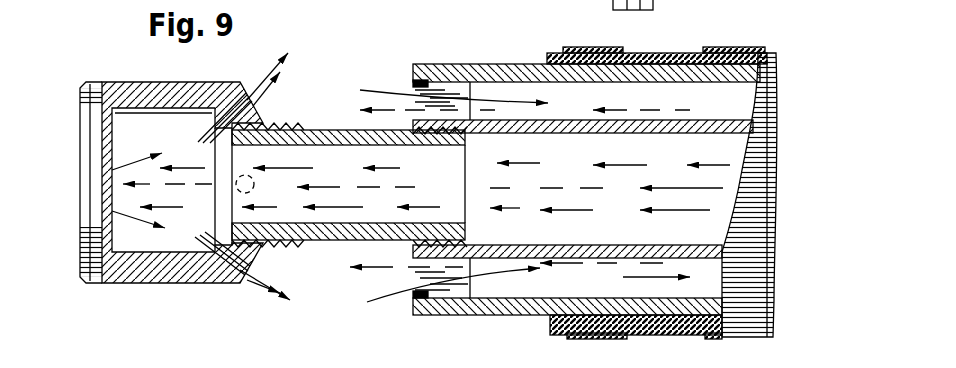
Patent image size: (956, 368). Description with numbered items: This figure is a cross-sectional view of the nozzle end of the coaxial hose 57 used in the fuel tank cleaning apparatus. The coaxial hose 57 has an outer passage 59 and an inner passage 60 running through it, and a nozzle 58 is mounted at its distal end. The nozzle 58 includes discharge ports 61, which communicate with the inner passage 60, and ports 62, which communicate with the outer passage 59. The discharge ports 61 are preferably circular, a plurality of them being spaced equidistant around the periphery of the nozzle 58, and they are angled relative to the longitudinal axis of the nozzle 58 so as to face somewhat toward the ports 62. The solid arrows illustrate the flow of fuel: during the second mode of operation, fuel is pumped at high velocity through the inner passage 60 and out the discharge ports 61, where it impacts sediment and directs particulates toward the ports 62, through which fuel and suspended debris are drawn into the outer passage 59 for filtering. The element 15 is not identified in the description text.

The valve unit 15 is at (656, 12).
The coaxial hose 57 is at (643, 53).
The nozzle 58 is at (127, 72).
The outer passage 59 is at (508, 92).
The inner passage 60 is at (697, 147).
The discharge ports 61 is at (237, 101).
The ports 62 is at (413, 85).